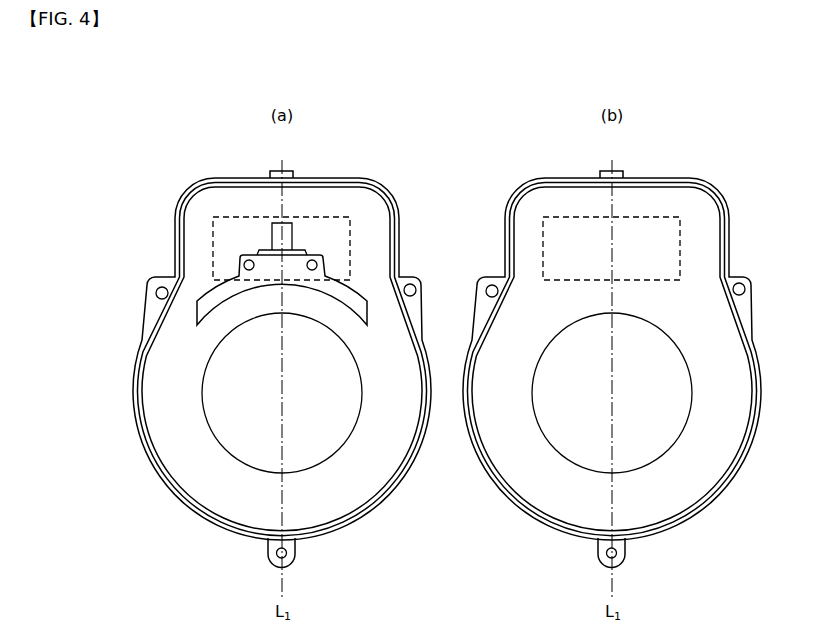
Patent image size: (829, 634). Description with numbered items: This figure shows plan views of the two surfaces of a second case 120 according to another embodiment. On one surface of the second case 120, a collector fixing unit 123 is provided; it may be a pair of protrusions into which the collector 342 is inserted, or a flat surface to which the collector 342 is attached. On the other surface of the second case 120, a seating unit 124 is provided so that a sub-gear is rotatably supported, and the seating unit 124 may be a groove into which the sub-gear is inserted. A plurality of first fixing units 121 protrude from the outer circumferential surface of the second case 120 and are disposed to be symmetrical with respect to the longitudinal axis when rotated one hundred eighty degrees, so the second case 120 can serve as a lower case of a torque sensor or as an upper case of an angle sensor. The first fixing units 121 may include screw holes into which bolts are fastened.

The second case 120 is at (485, 88).
The first fixing unit 121 is at (158, 301).
The collector fixing unit 123 is at (237, 222).
The seating unit 124 is at (680, 231).
The collector 342 is at (212, 290).